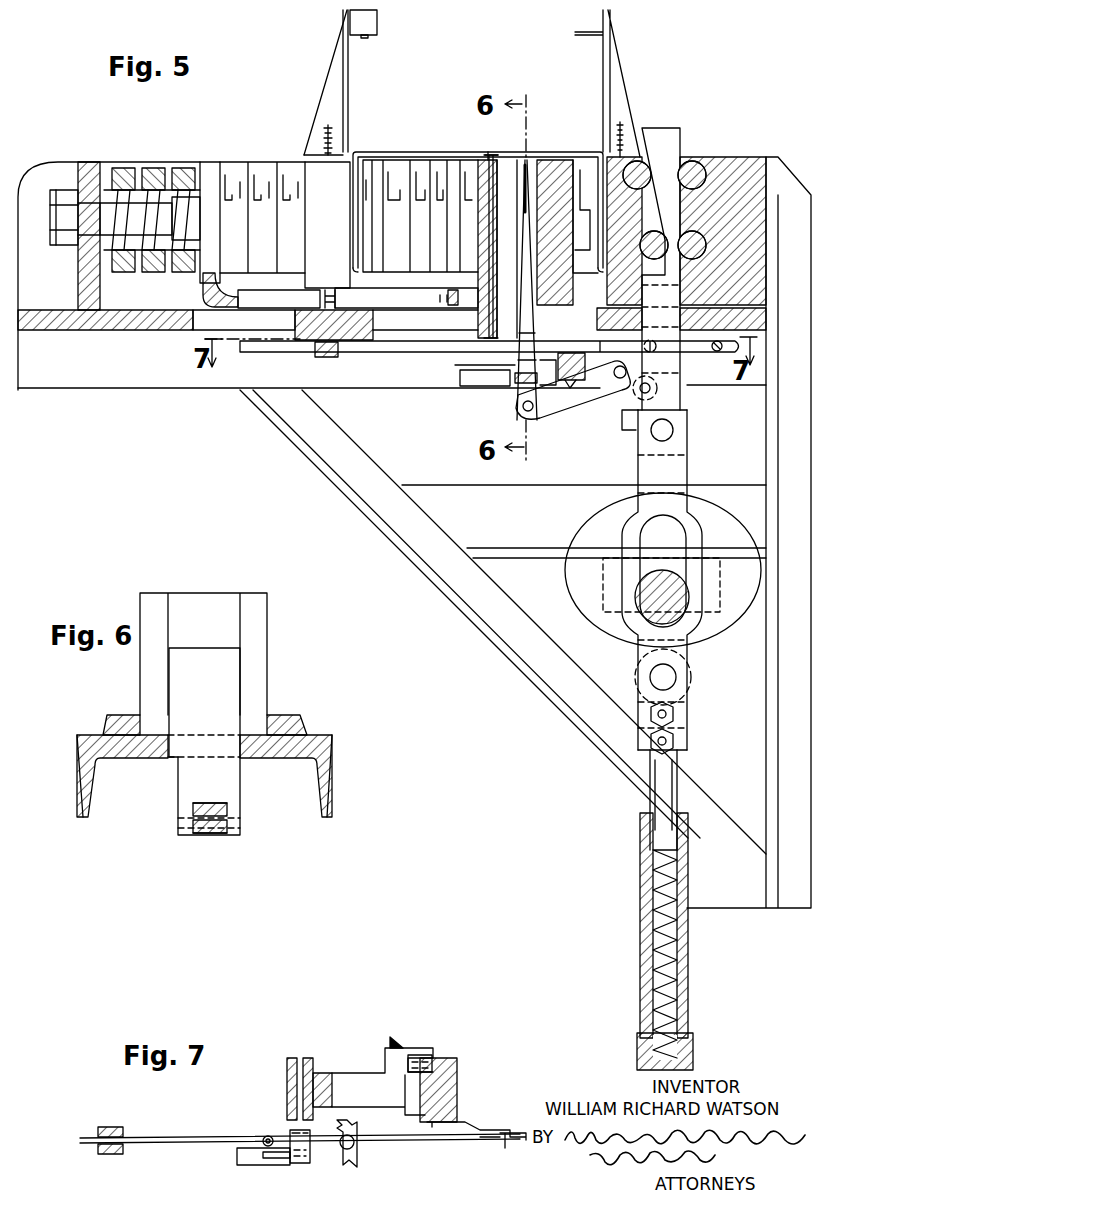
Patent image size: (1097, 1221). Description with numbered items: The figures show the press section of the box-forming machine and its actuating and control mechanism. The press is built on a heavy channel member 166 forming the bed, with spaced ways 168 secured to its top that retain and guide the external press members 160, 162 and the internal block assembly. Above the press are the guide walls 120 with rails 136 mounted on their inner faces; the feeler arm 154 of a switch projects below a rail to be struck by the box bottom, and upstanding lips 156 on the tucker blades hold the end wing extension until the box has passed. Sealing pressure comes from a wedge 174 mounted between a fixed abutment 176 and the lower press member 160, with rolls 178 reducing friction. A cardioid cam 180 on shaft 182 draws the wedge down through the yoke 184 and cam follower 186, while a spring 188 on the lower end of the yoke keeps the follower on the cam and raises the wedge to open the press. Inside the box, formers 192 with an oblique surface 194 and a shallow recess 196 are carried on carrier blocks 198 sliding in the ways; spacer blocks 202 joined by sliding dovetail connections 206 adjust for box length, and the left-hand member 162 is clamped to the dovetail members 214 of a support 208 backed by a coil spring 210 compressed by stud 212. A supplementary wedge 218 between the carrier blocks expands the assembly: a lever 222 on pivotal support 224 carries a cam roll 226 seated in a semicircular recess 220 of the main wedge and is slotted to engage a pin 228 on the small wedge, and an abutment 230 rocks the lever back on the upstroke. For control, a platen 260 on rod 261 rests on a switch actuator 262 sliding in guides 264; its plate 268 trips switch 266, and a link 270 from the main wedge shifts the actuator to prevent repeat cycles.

In FIG. 5, the guide walls 120 is at (349, 82).
In FIG. 5, the rails 136 is at (585, 36).
In FIG. 5, the feeler arm 154 is at (370, 18).
In FIG. 5, the upstanding lips 156 is at (367, 40).
In FIG. 5, the external press member 160 is at (635, 158).
In FIG. 5, the external press member 162 is at (327, 225).
In FIG. 5, the channel member 166 is at (122, 390).
In FIG. 6, the channel member 166 is at (93, 775).
In FIG. 5, the ways 168 is at (196, 302).
In FIG. 6, the ways 168 is at (102, 720).
In FIG. 5, the wedge 174 is at (663, 130).
In FIG. 5, the fixed abutment 176 is at (720, 157).
In FIG. 5, the rolls 178 is at (692, 162).
In FIG. 5, the cam 180 is at (710, 650).
In FIG. 7, the cam 180 is at (457, 1098).
In FIG. 5, the shaft 182 is at (690, 590).
In FIG. 5, the yoke 184 is at (688, 478).
In FIG. 5, the cam follower 186 is at (695, 680).
In FIG. 5, the spring 188 is at (668, 962).
In FIG. 5, the formers 192 is at (372, 170).
In FIG. 5, the oblique surface 194 is at (356, 160).
In FIG. 5, the shallow recess 196 is at (365, 272).
In FIG. 5, the carrier blocks 198 is at (510, 165).
In FIG. 6, the carrier blocks 198 is at (268, 608).
In FIG. 5, the spacer blocks 202 is at (262, 155).
In FIG. 5, the sliding dovetail connections 206 is at (250, 203).
In FIG. 5, the support 208 is at (222, 152).
In FIG. 5, the coil spring 210 is at (128, 168).
In FIG. 5, the stud 212 is at (125, 217).
In FIG. 5, the dovetail members 214 is at (286, 301).
In FIG. 5, the supplementary wedge 218 is at (515, 335).
In FIG. 6, the supplementary wedge 218 is at (183, 650).
In FIG. 5, the semicircular recess 220 is at (660, 392).
In FIG. 5, the lever 222 is at (555, 400).
In FIG. 6, the lever 222 is at (205, 836).
In FIG. 7, the lever 222 is at (372, 1050).
In FIG. 7, the pivotal support 224 is at (403, 1040).
In FIG. 7, the cam roll 226 is at (432, 1058).
In FIG. 5, the pin 228 is at (526, 378).
In FIG. 6, the pin 228 is at (232, 812).
In FIG. 7, the pin 228 is at (292, 1088).
In FIG. 5, the abutment 230 is at (625, 430).
In FIG. 5, the platen 260 is at (490, 152).
In FIG. 5, the rod 261 is at (488, 316).
In FIG. 7, the rod 261 is at (266, 1136).
In FIG. 5, the switch actuator 262 is at (406, 345).
In FIG. 7, the switch actuator 262 is at (158, 1145).
In FIG. 5, the guides 264 is at (318, 355).
In FIG. 7, the guides 264 is at (122, 1128).
In FIG. 5, the switch 266 is at (480, 381).
In FIG. 7, the switch 266 is at (262, 1162).
In FIG. 7, the plate 268 is at (308, 1162).
In FIG. 7, the link 270 is at (478, 1126).